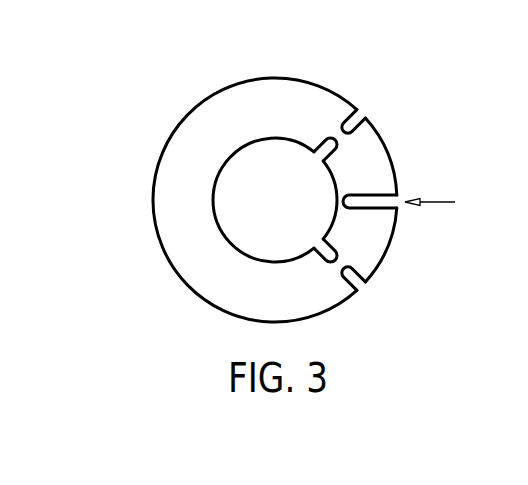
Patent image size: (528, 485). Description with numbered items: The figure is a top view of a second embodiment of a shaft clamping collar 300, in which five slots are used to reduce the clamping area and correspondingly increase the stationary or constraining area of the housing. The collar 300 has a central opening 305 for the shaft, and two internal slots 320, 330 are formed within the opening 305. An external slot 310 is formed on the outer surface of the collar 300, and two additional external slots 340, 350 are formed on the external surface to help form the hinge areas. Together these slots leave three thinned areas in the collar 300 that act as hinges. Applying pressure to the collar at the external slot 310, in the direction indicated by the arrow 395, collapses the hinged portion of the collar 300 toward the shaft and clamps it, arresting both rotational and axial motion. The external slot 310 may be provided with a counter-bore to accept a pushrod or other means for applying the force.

The collar 300 is at (195, 106).
The opening 305 is at (238, 175).
The external slot 310 is at (361, 203).
The internal slot 320 is at (322, 152).
The internal slot 330 is at (313, 250).
The external slot 340 is at (354, 112).
The external slot 350 is at (355, 286).
The arrow 395 is at (437, 202).